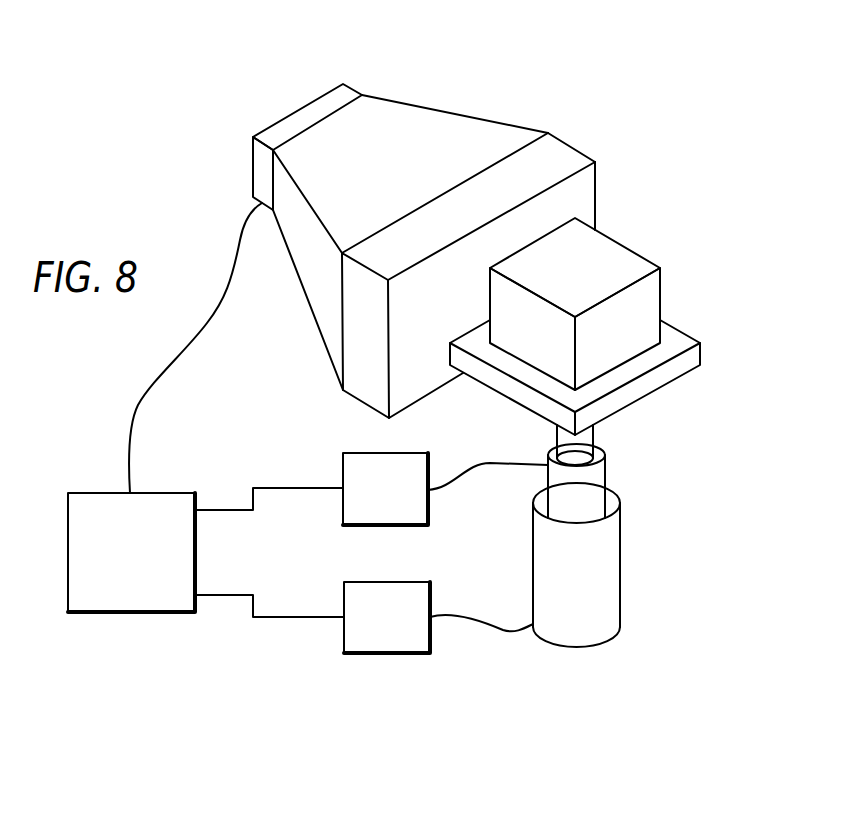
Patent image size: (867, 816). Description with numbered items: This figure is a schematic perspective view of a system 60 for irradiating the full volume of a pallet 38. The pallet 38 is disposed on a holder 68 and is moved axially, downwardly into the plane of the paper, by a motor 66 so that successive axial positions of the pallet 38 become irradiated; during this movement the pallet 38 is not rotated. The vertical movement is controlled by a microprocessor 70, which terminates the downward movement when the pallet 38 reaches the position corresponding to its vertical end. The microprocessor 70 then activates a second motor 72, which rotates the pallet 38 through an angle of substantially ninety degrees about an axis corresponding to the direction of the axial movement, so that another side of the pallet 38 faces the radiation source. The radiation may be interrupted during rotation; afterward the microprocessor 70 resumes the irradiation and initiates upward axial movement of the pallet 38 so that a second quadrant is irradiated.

The system 60 is at (490, 85).
The holder 68 is at (655, 380).
The pallet 38 is at (620, 593).
The motor 66 is at (343, 465).
The motor 72 is at (344, 638).
The microprocessor 70 is at (122, 615).